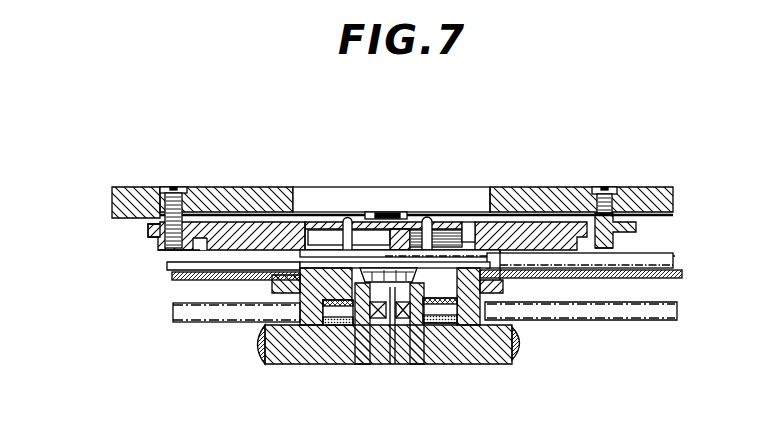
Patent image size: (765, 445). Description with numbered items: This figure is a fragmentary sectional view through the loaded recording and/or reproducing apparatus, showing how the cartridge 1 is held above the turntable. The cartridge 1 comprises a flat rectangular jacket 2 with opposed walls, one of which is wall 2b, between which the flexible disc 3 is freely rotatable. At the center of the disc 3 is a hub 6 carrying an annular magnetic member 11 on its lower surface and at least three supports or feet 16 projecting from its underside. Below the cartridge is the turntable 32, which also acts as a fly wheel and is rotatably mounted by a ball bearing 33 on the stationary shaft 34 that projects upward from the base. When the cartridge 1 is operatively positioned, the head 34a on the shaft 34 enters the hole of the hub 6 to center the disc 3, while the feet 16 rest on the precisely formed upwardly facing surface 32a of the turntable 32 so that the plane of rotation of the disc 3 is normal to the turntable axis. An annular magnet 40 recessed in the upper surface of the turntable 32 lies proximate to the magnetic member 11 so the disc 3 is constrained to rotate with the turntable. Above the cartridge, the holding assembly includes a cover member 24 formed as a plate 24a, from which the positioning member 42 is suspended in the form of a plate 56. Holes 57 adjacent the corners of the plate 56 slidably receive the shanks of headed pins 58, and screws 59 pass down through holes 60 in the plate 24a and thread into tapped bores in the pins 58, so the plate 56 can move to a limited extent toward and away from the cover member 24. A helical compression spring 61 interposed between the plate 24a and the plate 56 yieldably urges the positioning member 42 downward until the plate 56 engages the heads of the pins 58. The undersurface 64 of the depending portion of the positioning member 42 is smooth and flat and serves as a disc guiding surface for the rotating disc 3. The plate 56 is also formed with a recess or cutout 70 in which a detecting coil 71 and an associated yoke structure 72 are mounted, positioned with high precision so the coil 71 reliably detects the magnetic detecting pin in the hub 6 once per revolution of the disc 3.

The cartridge 1 is at (653, 255).
The jacket 2 is at (662, 302).
The wall of jacket 2b is at (560, 320).
The flexible disc 3 is at (172, 277).
The hub 6 is at (300, 303).
The annular magnetic member 11 is at (470, 343).
The supports 16 is at (508, 326).
The cover member 24 is at (139, 187).
The plate of cover member 24a is at (112, 193).
The turntable 32 is at (279, 347).
The upwardly facing surface of turntable 32a is at (264, 342).
The ball bearing 33 is at (373, 357).
The stationary shaft 34 is at (395, 348).
The head of shaft 34a is at (410, 283).
The annular magnet 40 is at (338, 320).
The positioning member 42 is at (647, 224).
The plate 56 is at (233, 237).
The holes 57 is at (150, 233).
The headed pins 58 is at (160, 249).
The screws 59 is at (165, 208).
The holes in plate of cover member 60 is at (137, 216).
The helical compression spring 61 is at (388, 212).
The undersurface of depending portion 64 is at (167, 266).
The recess or cutout 70 is at (468, 238).
The detecting coil 71 is at (446, 232).
The yoke structure 72 is at (427, 217).